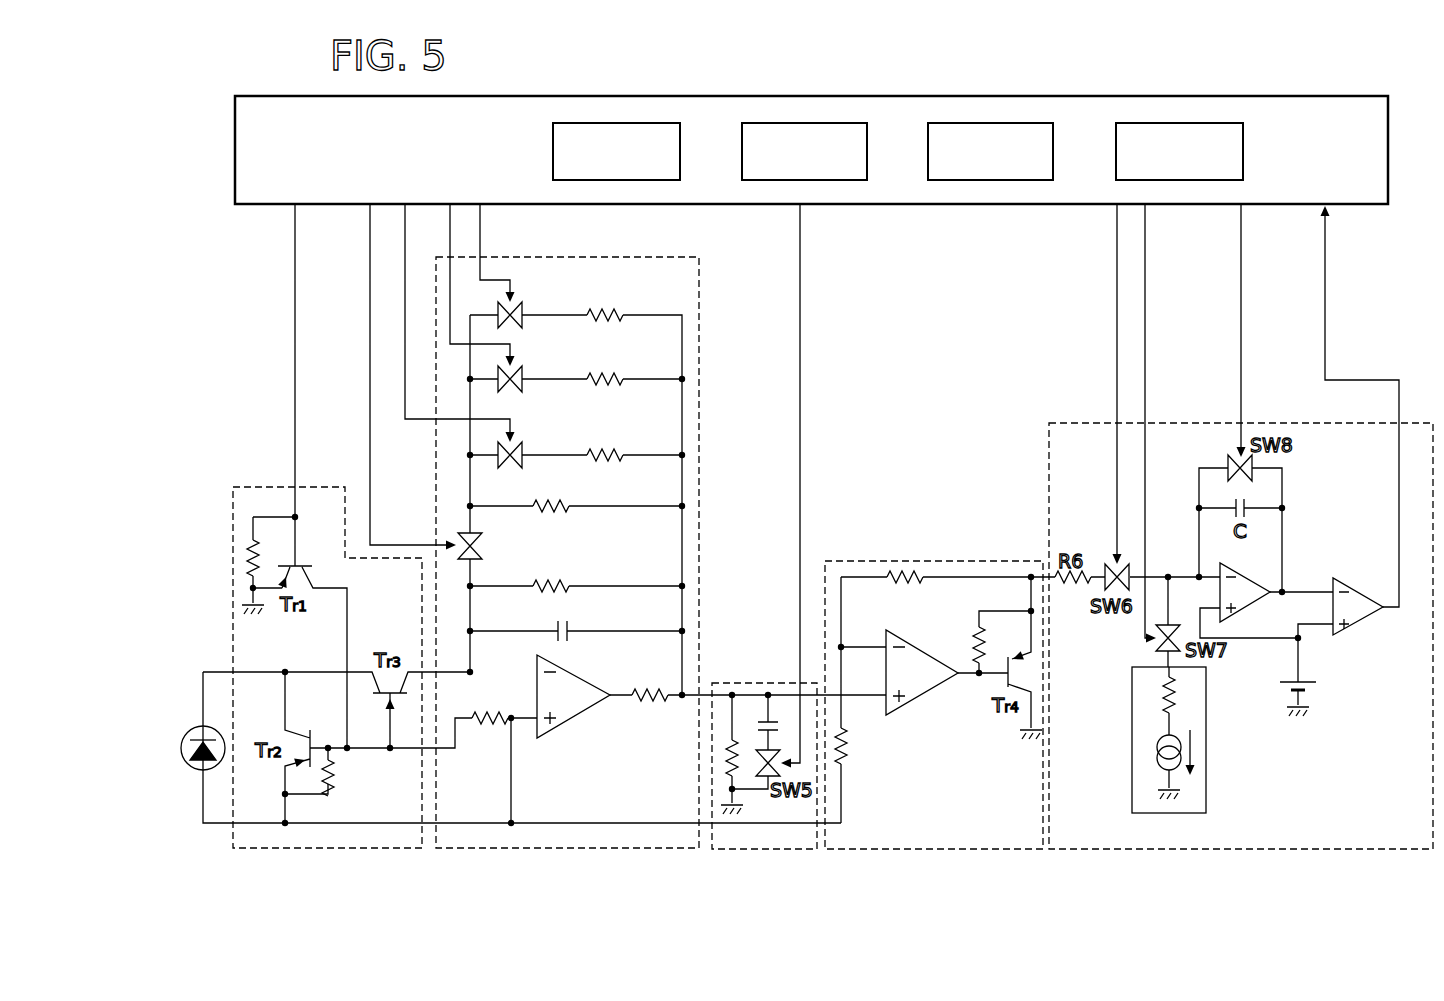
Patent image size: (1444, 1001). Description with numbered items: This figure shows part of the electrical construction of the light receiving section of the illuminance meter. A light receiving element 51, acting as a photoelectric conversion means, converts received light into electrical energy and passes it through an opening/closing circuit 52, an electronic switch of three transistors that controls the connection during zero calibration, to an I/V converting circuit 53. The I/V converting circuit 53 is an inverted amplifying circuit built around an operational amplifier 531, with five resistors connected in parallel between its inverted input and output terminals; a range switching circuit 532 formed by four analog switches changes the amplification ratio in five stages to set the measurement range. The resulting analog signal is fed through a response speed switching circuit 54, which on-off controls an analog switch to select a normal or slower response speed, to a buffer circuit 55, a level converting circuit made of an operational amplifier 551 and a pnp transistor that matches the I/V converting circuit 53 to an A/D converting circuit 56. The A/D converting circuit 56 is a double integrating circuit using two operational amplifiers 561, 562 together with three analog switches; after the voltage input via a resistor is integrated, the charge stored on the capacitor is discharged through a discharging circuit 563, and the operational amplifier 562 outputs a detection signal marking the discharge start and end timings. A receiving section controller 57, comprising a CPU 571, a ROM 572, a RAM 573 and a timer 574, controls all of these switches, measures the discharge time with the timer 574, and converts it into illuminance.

The light receiving element 51 is at (186, 736).
The opening/closing circuit 52 is at (298, 850).
The I/V converting circuit 53 is at (565, 850).
The response speed switching circuit 54 is at (765, 850).
The buffer circuit 55 is at (930, 850).
The A/D converting circuit 56 is at (1140, 850).
The receiving section controller 57 is at (811, 166).
The operational amplifier 531 is at (567, 722).
The range switching circuit 532 is at (531, 296).
The operational amplifier 551 is at (920, 697).
The operational amplifier 561 is at (1260, 588).
The operational amplifier 562 is at (1359, 590).
The discharging circuit 563 is at (1206, 778).
The CPU 571 is at (612, 123).
The ROM 572 is at (822, 123).
The RAM 573 is at (1010, 123).
The timer 574 is at (1198, 123).